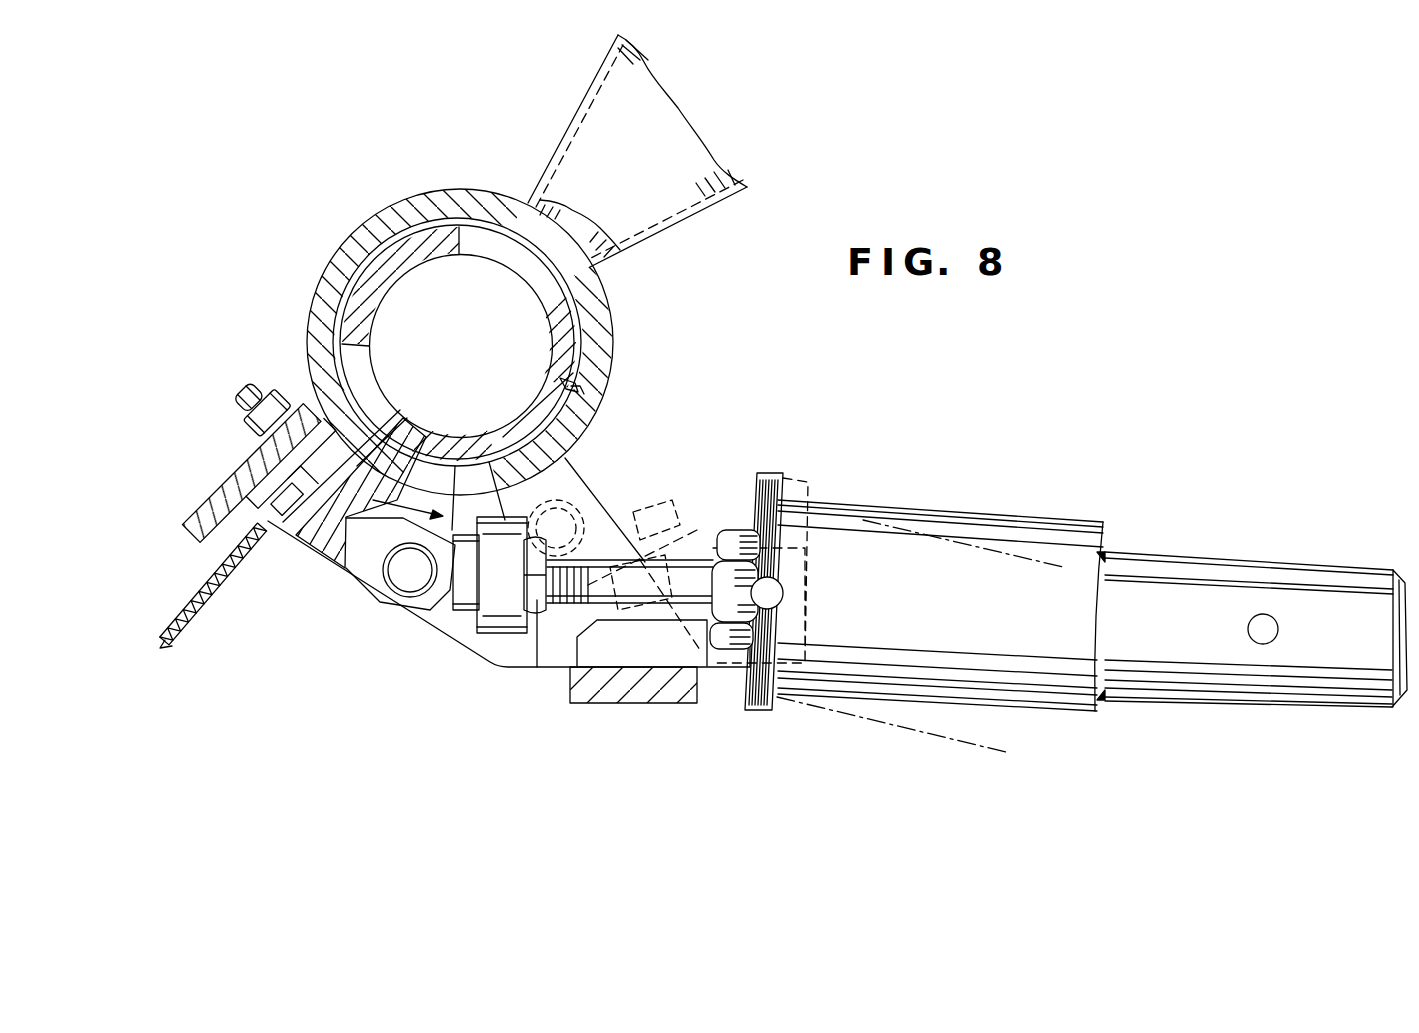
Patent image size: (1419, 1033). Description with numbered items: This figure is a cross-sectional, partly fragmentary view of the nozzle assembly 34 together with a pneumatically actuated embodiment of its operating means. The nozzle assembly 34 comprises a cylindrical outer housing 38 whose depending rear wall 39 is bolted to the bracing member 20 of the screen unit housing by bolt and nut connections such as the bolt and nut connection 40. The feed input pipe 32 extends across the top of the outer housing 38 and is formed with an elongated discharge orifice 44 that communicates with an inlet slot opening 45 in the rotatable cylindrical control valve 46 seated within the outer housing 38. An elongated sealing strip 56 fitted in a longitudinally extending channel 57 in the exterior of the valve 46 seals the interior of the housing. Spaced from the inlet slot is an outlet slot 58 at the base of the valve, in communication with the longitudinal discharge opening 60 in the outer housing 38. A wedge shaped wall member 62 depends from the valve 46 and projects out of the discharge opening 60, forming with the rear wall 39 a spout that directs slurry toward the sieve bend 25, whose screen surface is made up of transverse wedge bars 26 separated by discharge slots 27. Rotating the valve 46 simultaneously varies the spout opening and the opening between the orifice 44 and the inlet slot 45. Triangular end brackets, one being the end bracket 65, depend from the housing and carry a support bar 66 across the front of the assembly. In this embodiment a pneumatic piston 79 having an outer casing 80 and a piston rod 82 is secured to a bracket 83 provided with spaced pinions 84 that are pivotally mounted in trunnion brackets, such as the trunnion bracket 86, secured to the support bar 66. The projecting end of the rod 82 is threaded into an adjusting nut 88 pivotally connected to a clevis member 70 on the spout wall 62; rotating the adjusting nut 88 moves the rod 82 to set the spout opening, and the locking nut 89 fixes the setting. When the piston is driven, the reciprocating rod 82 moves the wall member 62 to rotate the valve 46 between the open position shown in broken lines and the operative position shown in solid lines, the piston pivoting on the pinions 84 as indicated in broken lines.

The bracing member 20 is at (240, 480).
The sieve bend 25 is at (192, 622).
The transverse wedge bars 26 is at (203, 593).
The discharge slots 27 is at (170, 637).
The feed input pipe 32 is at (697, 157).
The nozzle assembly 34 is at (434, 170).
The cylindrical outer housing 38 is at (597, 338).
The depending rear wall 39 is at (292, 540).
The bolt and nut connection 40 is at (263, 393).
The discharge orifice 44 is at (547, 238).
The inlet slot opening 45 is at (547, 293).
The rotatable cylindrical control valve 46 is at (567, 325).
The elongated sealing strip 56 is at (578, 384).
The longitudinally extending channel 57 is at (573, 382).
The outlet slot 58 is at (357, 352).
The longitudinal discharge opening 60 is at (405, 406).
The wedge shaped wall member 62 is at (330, 557).
The end bracket 65 is at (483, 645).
The support bar 66 is at (633, 693).
The clevis member 70 is at (415, 608).
The pneumatic piston 79 is at (1068, 499).
The outer casing 80 is at (1094, 548).
The piston rod 82 is at (700, 573).
The bracket 83 is at (770, 473).
The pinion 84 is at (773, 593).
The trunnion bracket 86 is at (713, 660).
The adjusting nut 88 is at (513, 530).
The locking nut 89 is at (540, 600).